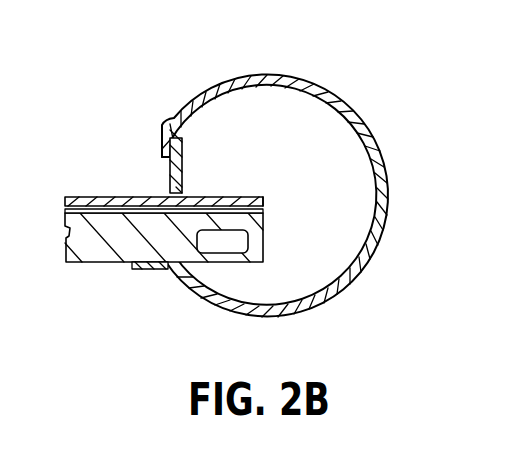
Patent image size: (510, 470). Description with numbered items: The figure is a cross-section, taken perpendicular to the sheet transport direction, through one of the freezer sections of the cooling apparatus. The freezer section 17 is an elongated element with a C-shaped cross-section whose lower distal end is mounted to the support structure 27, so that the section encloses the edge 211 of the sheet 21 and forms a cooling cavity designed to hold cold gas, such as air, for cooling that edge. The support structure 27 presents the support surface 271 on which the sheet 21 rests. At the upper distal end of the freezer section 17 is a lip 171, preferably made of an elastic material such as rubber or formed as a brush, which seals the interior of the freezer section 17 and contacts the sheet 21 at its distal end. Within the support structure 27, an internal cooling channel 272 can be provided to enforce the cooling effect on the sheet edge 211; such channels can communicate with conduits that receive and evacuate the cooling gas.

The freezer section 17 is at (213, 56).
The lip 171 is at (183, 170).
The sheet 21 is at (90, 197).
The edge of the sheet 211 is at (263, 205).
The support structure 27 is at (103, 262).
The support surface 271 is at (127, 211).
The internal cooling channel 272 is at (218, 244).